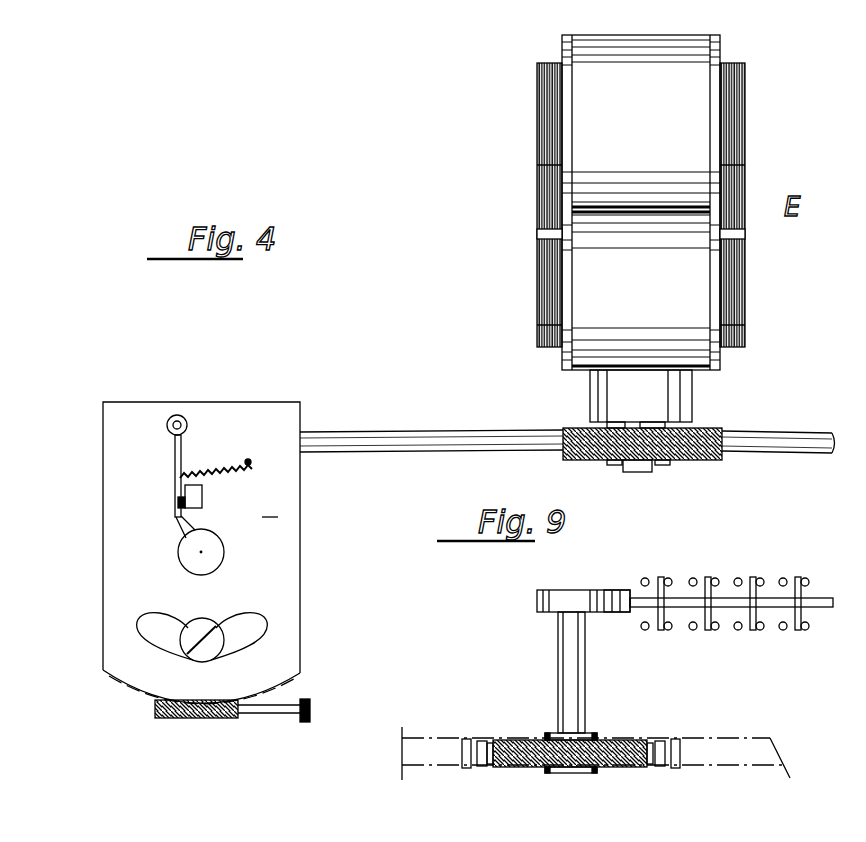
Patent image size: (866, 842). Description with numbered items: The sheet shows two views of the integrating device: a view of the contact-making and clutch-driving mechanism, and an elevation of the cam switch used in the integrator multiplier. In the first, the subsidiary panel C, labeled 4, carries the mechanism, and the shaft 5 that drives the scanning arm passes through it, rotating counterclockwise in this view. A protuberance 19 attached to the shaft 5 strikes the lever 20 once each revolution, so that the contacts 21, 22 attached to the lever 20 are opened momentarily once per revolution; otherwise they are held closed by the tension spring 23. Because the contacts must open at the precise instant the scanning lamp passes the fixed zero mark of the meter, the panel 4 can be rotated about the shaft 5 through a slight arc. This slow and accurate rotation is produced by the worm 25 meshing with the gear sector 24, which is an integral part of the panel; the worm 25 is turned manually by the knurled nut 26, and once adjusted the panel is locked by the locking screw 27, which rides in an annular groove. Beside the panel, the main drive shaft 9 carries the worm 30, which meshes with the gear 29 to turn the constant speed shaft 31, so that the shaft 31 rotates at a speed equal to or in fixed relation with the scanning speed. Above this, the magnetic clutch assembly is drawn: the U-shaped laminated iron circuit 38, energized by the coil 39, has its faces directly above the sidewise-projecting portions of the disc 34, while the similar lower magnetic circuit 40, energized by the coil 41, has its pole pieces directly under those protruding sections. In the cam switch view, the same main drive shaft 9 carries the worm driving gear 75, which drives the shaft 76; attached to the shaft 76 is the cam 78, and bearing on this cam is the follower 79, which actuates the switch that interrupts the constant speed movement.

In FIG. 4, the subsidiary panel 4 is at (300, 530).
In FIG. 4, the shaft 5 is at (190, 569).
In FIG. 4, the main drive shaft 9 is at (453, 454).
In FIG. 9, the main drive shaft 9 is at (722, 752).
In FIG. 4, the protuberance 19 is at (195, 516).
In FIG. 4, the lever 20 is at (175, 458).
In FIG. 4, the contact 21 is at (176, 501).
In FIG. 4, the contact 22 is at (200, 499).
In FIG. 4, the tension spring 23 is at (208, 466).
In FIG. 4, the gear sector 24 is at (292, 680).
In FIG. 4, the worm 25 is at (190, 720).
In FIG. 4, the knurled nut 26 is at (310, 712).
In FIG. 4, the locking screw 27 is at (201, 630).
In FIG. 4, the gear 29 is at (695, 466).
In FIG. 4, the worm 30 is at (610, 465).
In FIG. 4, the constant speed shaft 31 is at (649, 472).
In FIG. 4, the disc 34 is at (745, 234).
In FIG. 4, the U-shaped laminated iron circuit 38 is at (759, 129).
In FIG. 4, the coil 39 is at (672, 104).
In FIG. 4, the lower magnetic circuit 40 is at (757, 306).
In FIG. 4, the coil 41 is at (664, 298).
In FIG. 9, the worm driving gear 75 is at (618, 742).
In FIG. 9, the shaft 76 is at (585, 684).
In FIG. 9, the cam 78 is at (543, 590).
In FIG. 9, the follower 79 is at (620, 592).